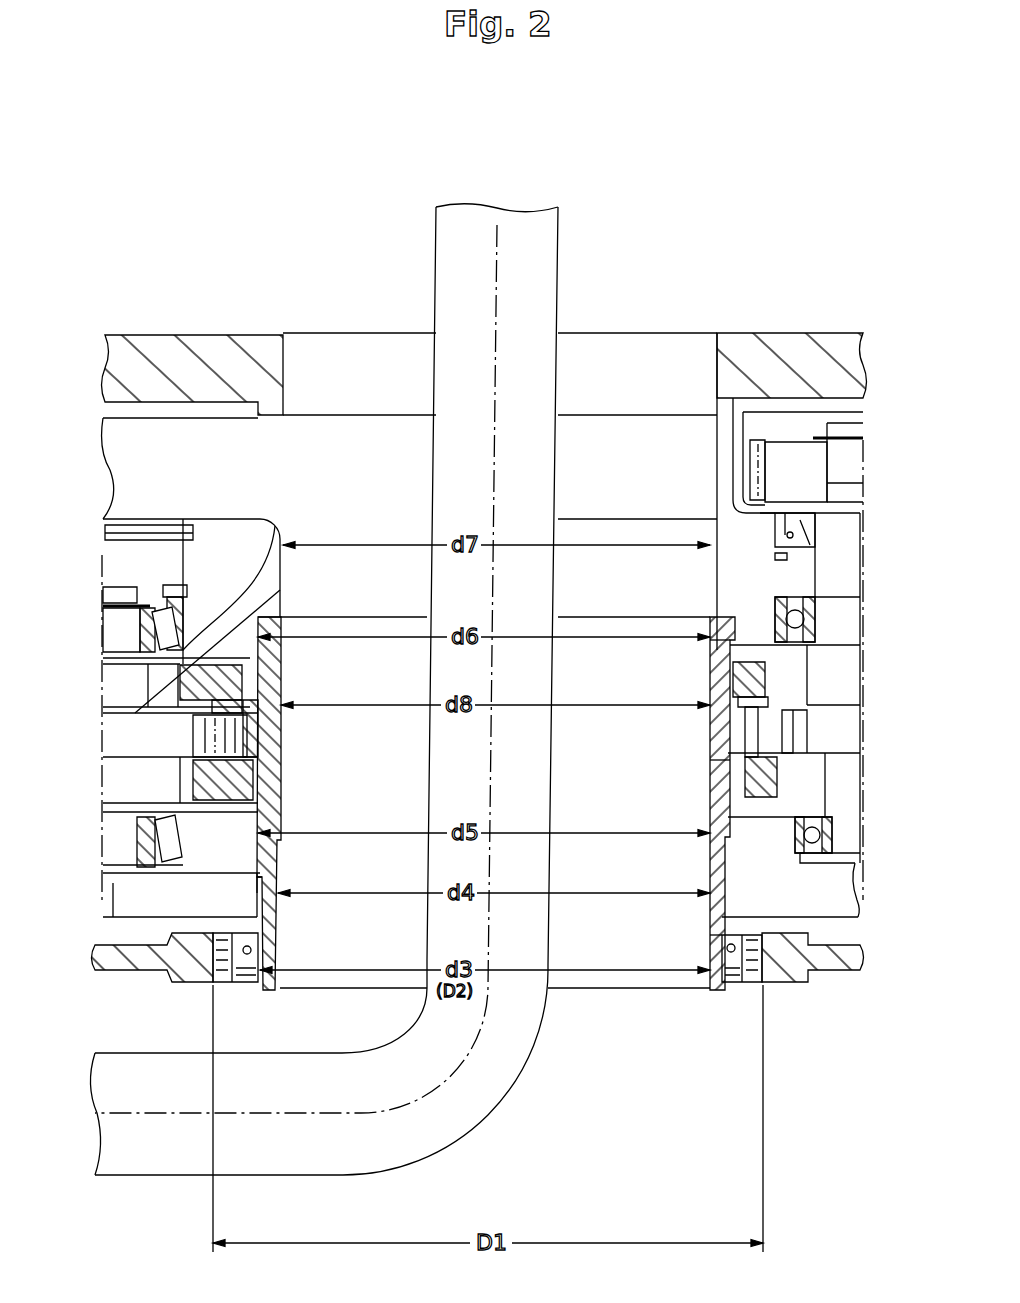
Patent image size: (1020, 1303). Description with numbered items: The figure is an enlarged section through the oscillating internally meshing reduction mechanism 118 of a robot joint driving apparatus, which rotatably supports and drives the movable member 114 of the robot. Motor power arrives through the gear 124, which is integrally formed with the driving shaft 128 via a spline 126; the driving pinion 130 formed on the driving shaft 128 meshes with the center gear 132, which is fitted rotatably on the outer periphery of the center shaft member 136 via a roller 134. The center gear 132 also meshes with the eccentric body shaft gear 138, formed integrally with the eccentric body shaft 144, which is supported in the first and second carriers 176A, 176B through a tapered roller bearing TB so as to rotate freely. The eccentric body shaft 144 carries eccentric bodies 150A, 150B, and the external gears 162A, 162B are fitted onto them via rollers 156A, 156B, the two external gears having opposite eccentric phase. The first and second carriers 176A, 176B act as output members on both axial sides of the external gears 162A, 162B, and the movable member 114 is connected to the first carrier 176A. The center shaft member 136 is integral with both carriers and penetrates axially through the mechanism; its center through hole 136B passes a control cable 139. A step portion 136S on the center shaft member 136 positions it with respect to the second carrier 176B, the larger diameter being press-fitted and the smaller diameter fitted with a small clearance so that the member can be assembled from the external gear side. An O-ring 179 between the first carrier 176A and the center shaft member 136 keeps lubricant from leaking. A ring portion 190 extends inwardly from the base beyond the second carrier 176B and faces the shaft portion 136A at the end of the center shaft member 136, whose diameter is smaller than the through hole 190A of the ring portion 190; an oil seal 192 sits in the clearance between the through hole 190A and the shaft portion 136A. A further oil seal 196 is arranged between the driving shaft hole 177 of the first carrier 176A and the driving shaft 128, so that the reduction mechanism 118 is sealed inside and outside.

The oscillating internally meshing reduction mechanism 118 is at (637, 226).
The movable member 114 is at (243, 360).
The control cable 139 is at (390, 1158).
The first carrier 176A is at (227, 545).
The second carrier 176B is at (172, 922).
The roller 156A is at (271, 533).
The roller 156B is at (255, 805).
The eccentric body shaft gear 138 is at (280, 590).
The O-ring 179 is at (262, 628).
The tapered roller bearing TB is at (140, 583).
The eccentric body shaft 144 is at (108, 625).
The eccentric body 150A is at (118, 690).
The eccentric body 150B is at (125, 782).
The external gear 162A is at (277, 690).
The external gear 162B is at (180, 783).
The center shaft member 136 is at (279, 862).
The shaft portion 136A is at (253, 983).
The center through hole 136B is at (278, 908).
The step portion 136S is at (712, 866).
The oil seal 196 is at (775, 528).
The gear 124 is at (780, 472).
The spline 126 is at (863, 452).
The driving shaft hole 177 is at (777, 554).
The driving shaft 128 is at (823, 565).
The driving pinion 130 is at (795, 737).
The roller 134 is at (735, 721).
The center gear 132 is at (765, 738).
The oil seal 192 is at (712, 968).
The ring portion 190 is at (825, 965).
The through hole 190A is at (742, 980).